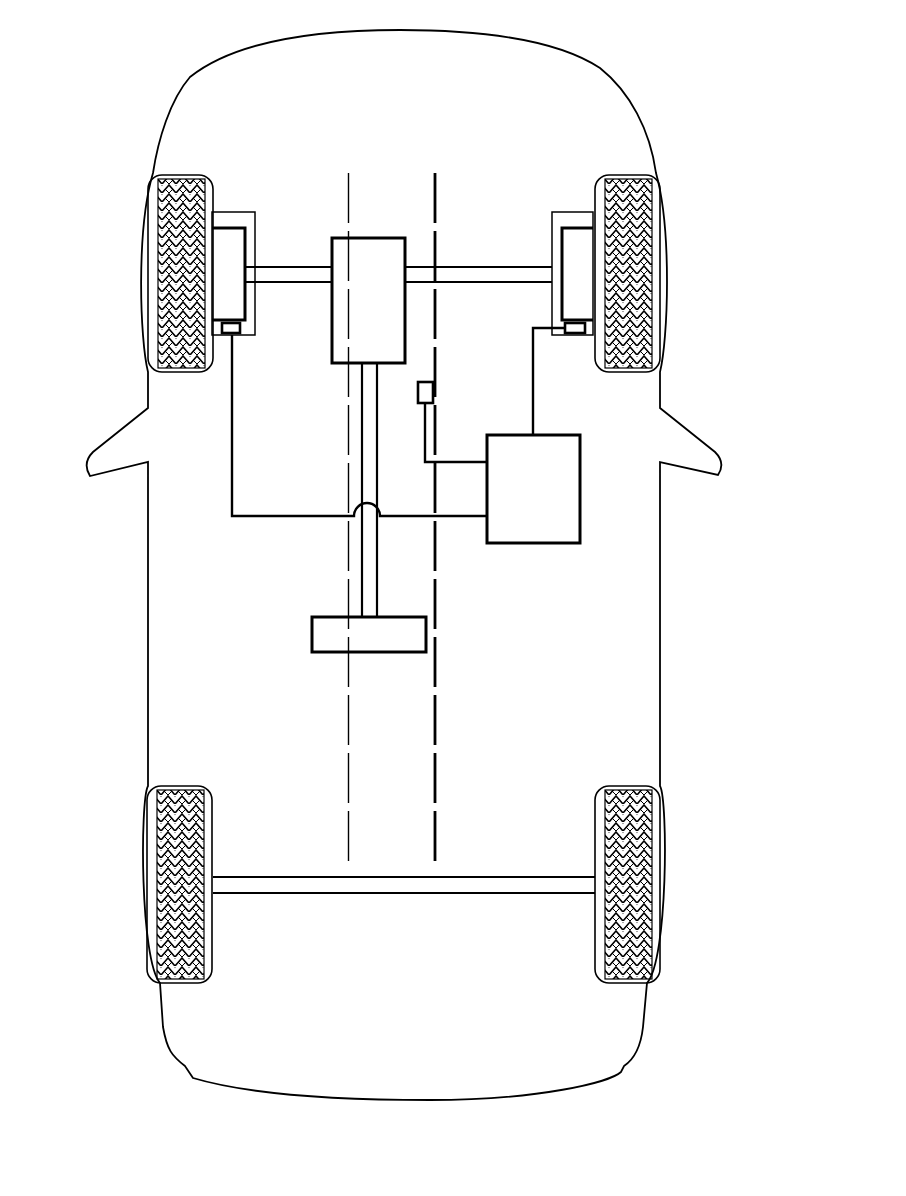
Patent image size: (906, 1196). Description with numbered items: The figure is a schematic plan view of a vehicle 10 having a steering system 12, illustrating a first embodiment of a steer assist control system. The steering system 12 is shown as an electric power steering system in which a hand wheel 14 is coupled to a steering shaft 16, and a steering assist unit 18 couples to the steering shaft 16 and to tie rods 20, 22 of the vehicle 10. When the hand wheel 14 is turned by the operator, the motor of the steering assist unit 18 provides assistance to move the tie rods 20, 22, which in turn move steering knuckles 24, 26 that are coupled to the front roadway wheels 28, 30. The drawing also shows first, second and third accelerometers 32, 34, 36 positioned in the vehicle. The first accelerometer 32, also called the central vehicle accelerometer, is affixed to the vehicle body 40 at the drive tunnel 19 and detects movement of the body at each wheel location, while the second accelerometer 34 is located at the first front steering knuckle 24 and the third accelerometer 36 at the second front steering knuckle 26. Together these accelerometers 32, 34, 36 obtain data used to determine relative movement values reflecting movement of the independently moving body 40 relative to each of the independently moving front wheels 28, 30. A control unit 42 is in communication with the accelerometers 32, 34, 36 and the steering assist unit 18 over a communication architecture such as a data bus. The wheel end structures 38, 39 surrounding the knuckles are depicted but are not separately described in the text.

The vehicle 10 is at (153, 90).
The steering system 12 is at (251, 569).
The hand wheel 14 is at (312, 635).
The steering shaft 16 is at (360, 560).
The steering assist unit 18 is at (375, 238).
The drive tunnel 19 is at (437, 705).
The tie rod 20 is at (287, 265).
The tie rod 22 is at (502, 265).
The steering knuckle 24 is at (249, 296).
The steering knuckle 26 is at (558, 296).
The roadway wheel 28 is at (140, 258).
The roadway wheel 30 is at (664, 256).
The first accelerometer 32 is at (435, 393).
The second accelerometer 34 is at (237, 335).
The third accelerometer 36 is at (575, 337).
The left wheel end assembly 38 is at (255, 228).
The right wheel end assembly 39 is at (552, 228).
The vehicle body 40 is at (588, 63).
The control unit 42 is at (557, 435).